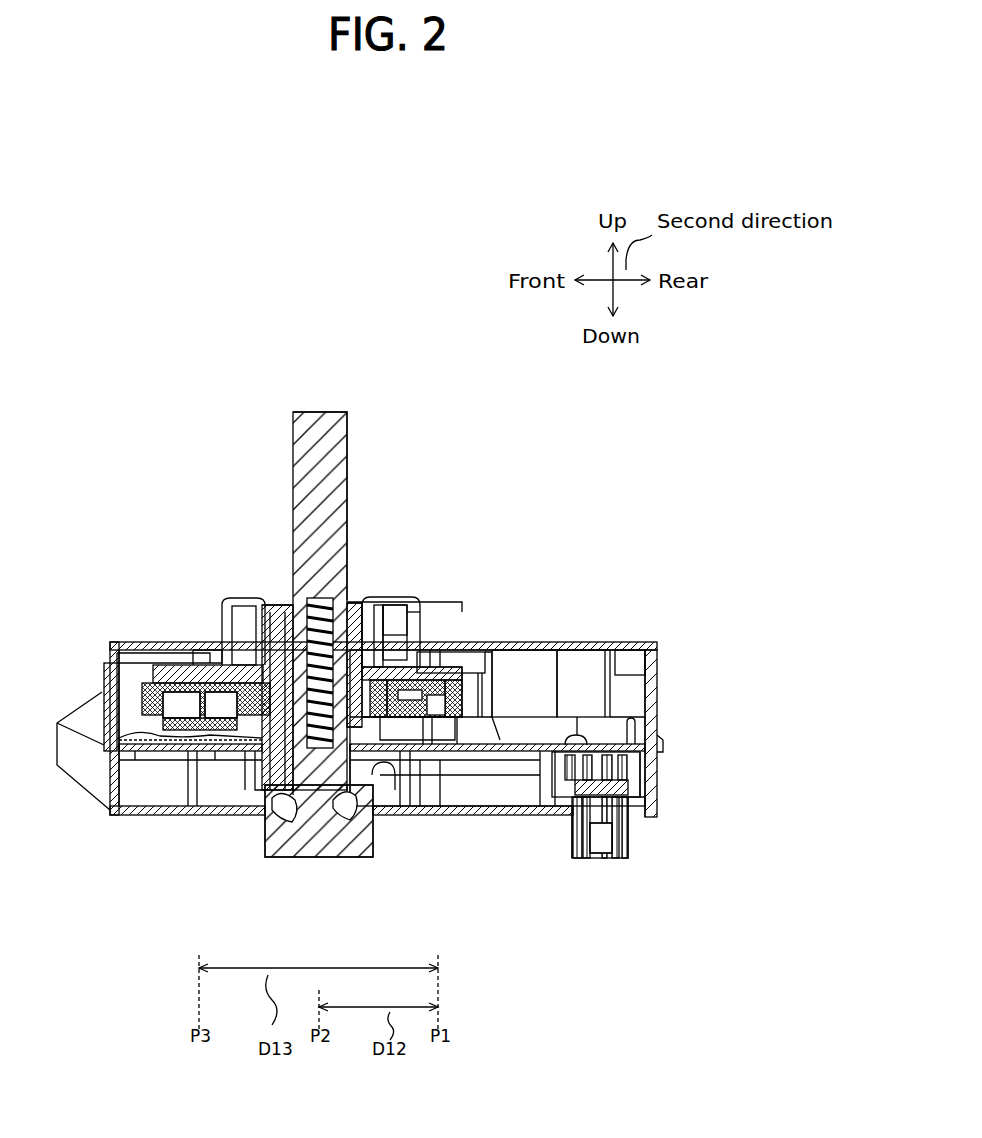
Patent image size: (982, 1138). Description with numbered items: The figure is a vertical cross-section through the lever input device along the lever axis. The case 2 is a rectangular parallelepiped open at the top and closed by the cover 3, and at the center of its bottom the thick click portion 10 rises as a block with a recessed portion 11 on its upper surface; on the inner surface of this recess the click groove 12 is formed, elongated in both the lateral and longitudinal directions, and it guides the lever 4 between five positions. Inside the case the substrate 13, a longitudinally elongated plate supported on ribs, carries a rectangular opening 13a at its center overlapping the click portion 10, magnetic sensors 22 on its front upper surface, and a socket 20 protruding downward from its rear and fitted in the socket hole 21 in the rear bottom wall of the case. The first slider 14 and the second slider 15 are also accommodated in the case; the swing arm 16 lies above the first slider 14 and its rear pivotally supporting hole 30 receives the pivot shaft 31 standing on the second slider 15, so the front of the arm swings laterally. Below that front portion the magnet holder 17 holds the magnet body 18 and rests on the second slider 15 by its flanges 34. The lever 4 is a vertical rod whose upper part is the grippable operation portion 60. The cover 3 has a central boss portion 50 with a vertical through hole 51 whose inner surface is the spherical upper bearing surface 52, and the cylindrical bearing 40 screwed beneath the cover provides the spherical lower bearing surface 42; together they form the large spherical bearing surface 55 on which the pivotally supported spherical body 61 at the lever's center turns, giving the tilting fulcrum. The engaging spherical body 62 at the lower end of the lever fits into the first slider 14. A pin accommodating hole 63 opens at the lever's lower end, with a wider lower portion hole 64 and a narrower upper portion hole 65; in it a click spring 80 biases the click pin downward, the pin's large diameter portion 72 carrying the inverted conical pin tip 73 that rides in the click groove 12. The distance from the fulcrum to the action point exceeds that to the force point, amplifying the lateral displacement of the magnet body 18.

The case 2 is at (492, 815).
The cover 3 is at (628, 645).
The lever 4 is at (347, 412).
The click portion 10 is at (325, 857).
The recessed portion 11 is at (384, 790).
The click groove 12 is at (340, 857).
The substrate 13 is at (530, 760).
The opening 13a is at (418, 790).
The first slider 14 is at (235, 605).
The second slider 15 is at (470, 790).
The swing arm 16 is at (200, 650).
The magnet holder 17 is at (160, 683).
The magnet body 18 is at (192, 775).
The socket 20 is at (618, 860).
The socket hole 21 is at (652, 800).
The magnetic sensors 22 is at (95, 745).
The pivotally supporting hole 30 is at (465, 655).
The pivot shaft 31 is at (470, 650).
The flanges 34 is at (108, 670).
The bearing 40 is at (420, 628).
The lower bearing surface 42 is at (412, 612).
The boss portion 50 is at (368, 603).
The through hole 51 is at (355, 600).
The upper bearing surface 52 is at (398, 612).
The spherical bearing surface 55 is at (466, 592).
The operation portion 60 is at (350, 445).
The pivotally supported spherical body 61 is at (270, 605).
The engaging spherical body 62 is at (238, 790).
The pin accommodating hole 63 is at (290, 622).
The lower portion hole 64 is at (270, 793).
The upper portion hole 65 is at (288, 600).
The large diameter portion 72 is at (280, 818).
The pin tip 73 is at (300, 830).
The click spring 80 is at (318, 600).